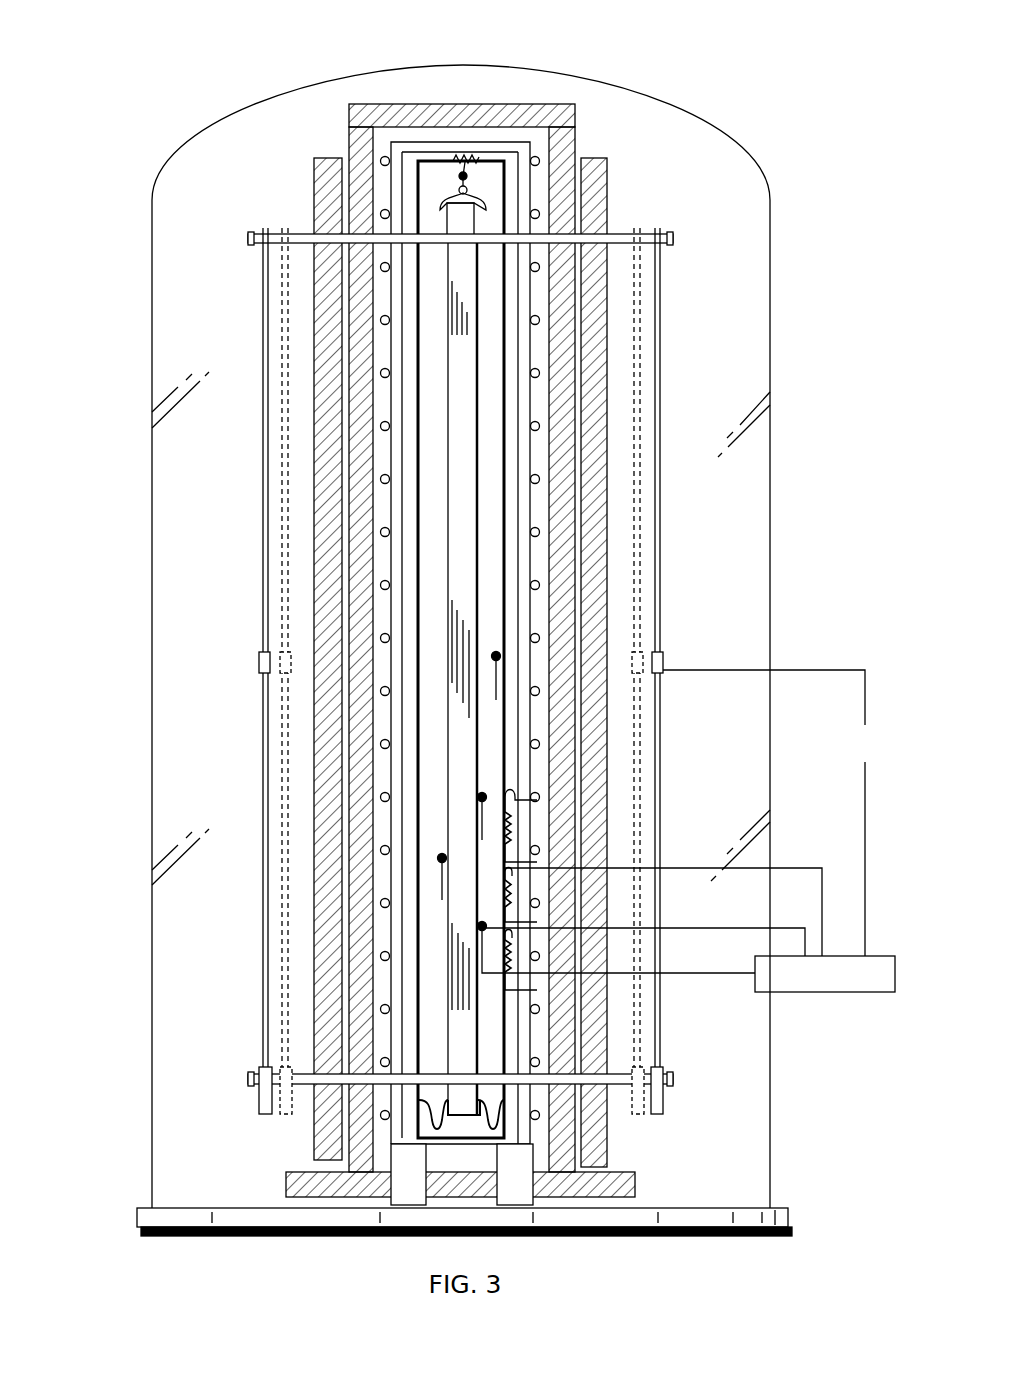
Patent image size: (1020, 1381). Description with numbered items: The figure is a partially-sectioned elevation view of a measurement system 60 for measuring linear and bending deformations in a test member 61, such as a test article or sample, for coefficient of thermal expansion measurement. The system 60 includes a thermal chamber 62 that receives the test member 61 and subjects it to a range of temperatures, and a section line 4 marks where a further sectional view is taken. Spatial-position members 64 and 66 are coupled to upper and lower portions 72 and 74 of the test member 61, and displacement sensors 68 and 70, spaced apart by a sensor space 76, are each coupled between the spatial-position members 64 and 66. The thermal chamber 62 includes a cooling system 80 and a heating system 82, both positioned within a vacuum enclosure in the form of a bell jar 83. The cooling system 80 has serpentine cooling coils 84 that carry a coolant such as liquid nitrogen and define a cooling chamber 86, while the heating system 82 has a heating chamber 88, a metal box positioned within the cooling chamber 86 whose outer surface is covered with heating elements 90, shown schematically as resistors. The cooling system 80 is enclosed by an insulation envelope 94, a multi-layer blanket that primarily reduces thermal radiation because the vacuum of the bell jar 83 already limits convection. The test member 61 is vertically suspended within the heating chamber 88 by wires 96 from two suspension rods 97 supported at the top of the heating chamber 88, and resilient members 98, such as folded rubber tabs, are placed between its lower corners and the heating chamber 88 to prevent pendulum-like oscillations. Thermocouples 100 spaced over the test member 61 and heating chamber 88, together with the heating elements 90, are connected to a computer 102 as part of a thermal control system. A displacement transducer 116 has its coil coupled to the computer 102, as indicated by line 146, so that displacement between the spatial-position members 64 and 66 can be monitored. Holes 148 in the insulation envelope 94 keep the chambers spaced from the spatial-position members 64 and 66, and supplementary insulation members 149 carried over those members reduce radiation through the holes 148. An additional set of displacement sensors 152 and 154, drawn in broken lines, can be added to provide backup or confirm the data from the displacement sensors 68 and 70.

The measurement system 60 is at (693, 146).
The test member 61 is at (428, 410).
The thermal chamber 62 is at (333, 479).
The spatial-position member 64 is at (255, 233).
The spatial-position member 66 is at (258, 1068).
The displacement sensor 68 is at (247, 516).
The displacement sensor 70 is at (673, 524).
The upper portion 72 is at (440, 213).
The lower portion 74 is at (447, 1063).
The sensor space 76 is at (654, 577).
The cooling system 80 is at (386, 771).
The heating system 82 is at (522, 736).
The bell jar 83 is at (160, 875).
The cooling coils 84 is at (410, 872).
The cooling chamber 86 is at (418, 835).
The heating chamber 88 is at (505, 728).
The heating elements 90 is at (508, 812).
The insulation envelope 94 is at (575, 118).
The wires 96 is at (549, 172).
The suspension rods 97 is at (432, 160).
The resilient members 98 is at (430, 1124).
The thermocouples 100 is at (483, 927).
The computer 102 is at (812, 993).
The displacement transducer 116 is at (668, 660).
The line 146 is at (774, 813).
The holes 148 is at (568, 225).
The supplementary insulation members 149 is at (610, 290).
The displacement sensor 152 is at (285, 603).
The displacement sensor 154 is at (640, 450).
The section line 4- 4 is at (744, 270).